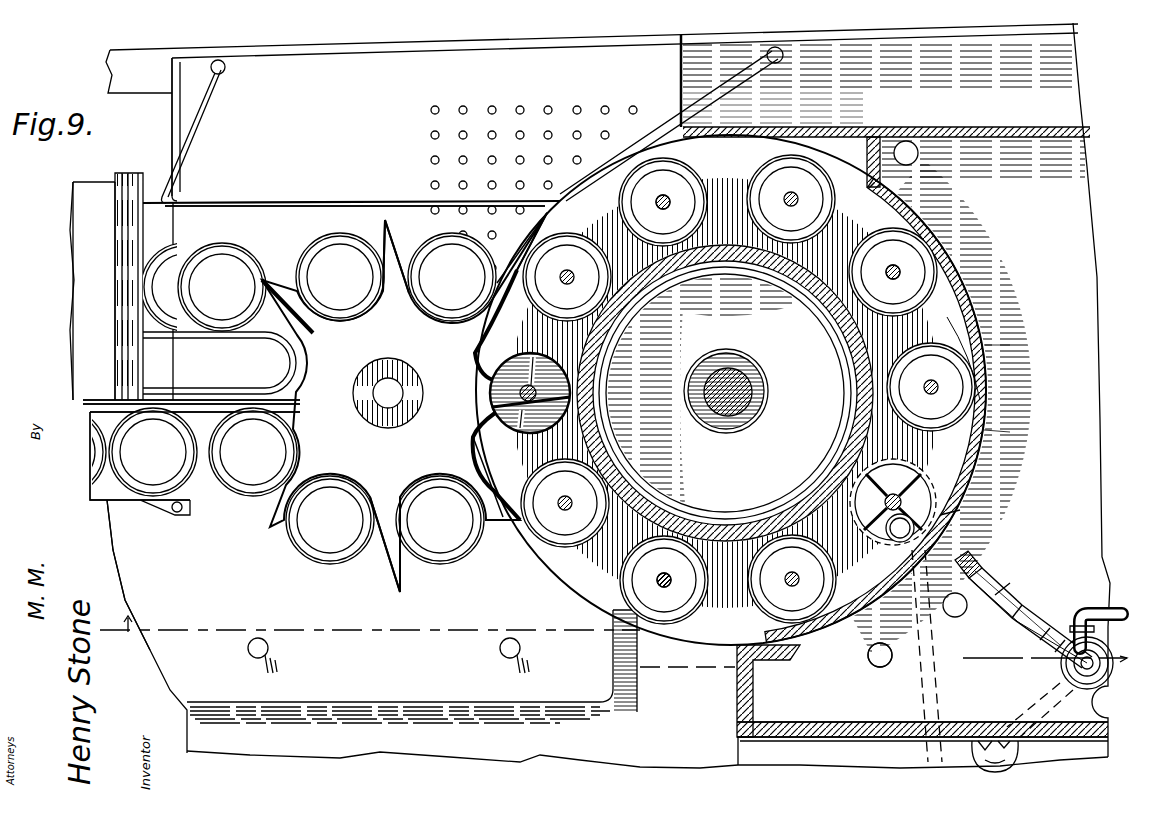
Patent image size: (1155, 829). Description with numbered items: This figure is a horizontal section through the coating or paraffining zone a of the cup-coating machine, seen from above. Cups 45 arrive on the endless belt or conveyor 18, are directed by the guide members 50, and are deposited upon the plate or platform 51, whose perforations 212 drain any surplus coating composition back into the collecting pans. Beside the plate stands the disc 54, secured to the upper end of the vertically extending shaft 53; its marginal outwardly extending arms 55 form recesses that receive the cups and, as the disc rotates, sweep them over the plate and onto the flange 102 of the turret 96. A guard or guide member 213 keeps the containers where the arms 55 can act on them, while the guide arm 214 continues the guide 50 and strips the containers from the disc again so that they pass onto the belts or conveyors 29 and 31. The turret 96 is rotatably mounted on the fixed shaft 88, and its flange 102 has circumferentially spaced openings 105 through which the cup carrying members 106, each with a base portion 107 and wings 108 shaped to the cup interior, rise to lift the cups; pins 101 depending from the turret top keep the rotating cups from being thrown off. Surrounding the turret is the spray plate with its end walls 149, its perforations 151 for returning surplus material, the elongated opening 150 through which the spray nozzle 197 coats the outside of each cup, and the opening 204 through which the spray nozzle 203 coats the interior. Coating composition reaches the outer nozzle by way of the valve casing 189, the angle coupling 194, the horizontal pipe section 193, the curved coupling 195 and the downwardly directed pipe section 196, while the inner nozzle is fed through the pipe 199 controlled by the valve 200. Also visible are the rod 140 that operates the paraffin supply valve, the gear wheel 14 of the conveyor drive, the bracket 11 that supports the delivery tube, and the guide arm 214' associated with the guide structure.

The plate or platform 51 is at (372, 50).
The coating or paraffining zone a is at (618, 178).
The perforations 212 is at (605, 106).
The turret 96 is at (724, 250).
The end walls 149 is at (855, 734).
The perforations 151 is at (870, 675).
The pins 101 is at (660, 580).
The cups 45 is at (726, 588).
The guard or guide member 213 is at (348, 200).
The belt or conveyor 31 is at (148, 196).
The slide bar 214' is at (64, 291).
The arms 55 is at (418, 572).
The flange 102 is at (948, 318).
The rod 140 is at (990, 340).
The shaft 88 is at (752, 372).
The cup carrying members 106 is at (905, 482).
The shaft 53 is at (398, 392).
The guide arm 214 is at (219, 363).
The belt or conveyor 29 is at (162, 397).
The guide members 50 is at (188, 407).
The elongated opening 150 is at (995, 428).
The openings 105 is at (960, 498).
The base portion 107 is at (890, 542).
The wings 108 is at (886, 530).
The opening 204 is at (944, 516).
The spray nozzle 197 is at (965, 552).
The pipe section 196 is at (985, 562).
The coupling 195 is at (984, 566).
The pipe section 193 is at (1035, 615).
The gear wheel 14 is at (1002, 604).
The angle coupling 194 is at (1074, 618).
The spray nozzle 203 is at (915, 636).
The endless belt or conveyor 18 is at (137, 570).
The bracket 11 is at (618, 646).
The valve casing 189 is at (1060, 672).
The pipe 199 is at (1022, 755).
The valve 200 is at (1003, 768).
The disc 54 is at (372, 562).